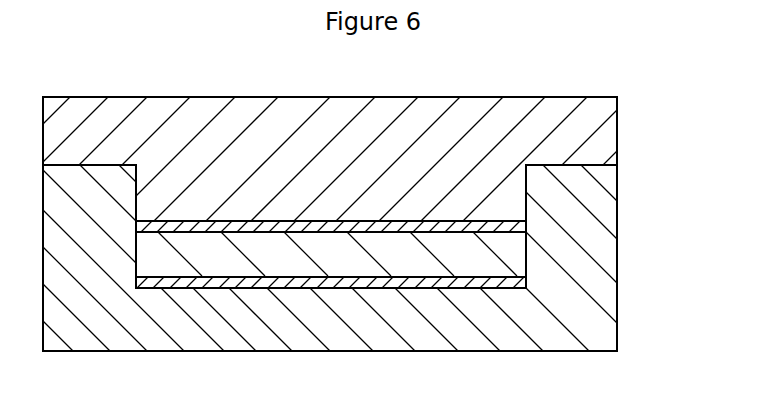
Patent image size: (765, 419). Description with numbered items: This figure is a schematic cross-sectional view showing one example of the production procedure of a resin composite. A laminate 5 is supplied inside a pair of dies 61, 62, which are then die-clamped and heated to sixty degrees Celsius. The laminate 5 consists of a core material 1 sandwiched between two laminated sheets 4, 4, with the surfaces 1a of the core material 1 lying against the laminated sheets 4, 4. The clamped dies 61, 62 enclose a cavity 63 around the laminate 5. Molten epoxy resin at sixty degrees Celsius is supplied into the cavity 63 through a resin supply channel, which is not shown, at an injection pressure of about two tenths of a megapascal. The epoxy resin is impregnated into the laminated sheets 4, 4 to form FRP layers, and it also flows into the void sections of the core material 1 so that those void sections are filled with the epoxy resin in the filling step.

The core material 1 is at (526, 258).
The surface of piezoelectric body 1a is at (263, 232).
The laminated sheet 4 is at (526, 226).
The laminate 5 is at (672, 228).
The die 61 is at (608, 343).
The die 62 is at (613, 133).
The cavity 63 is at (526, 186).